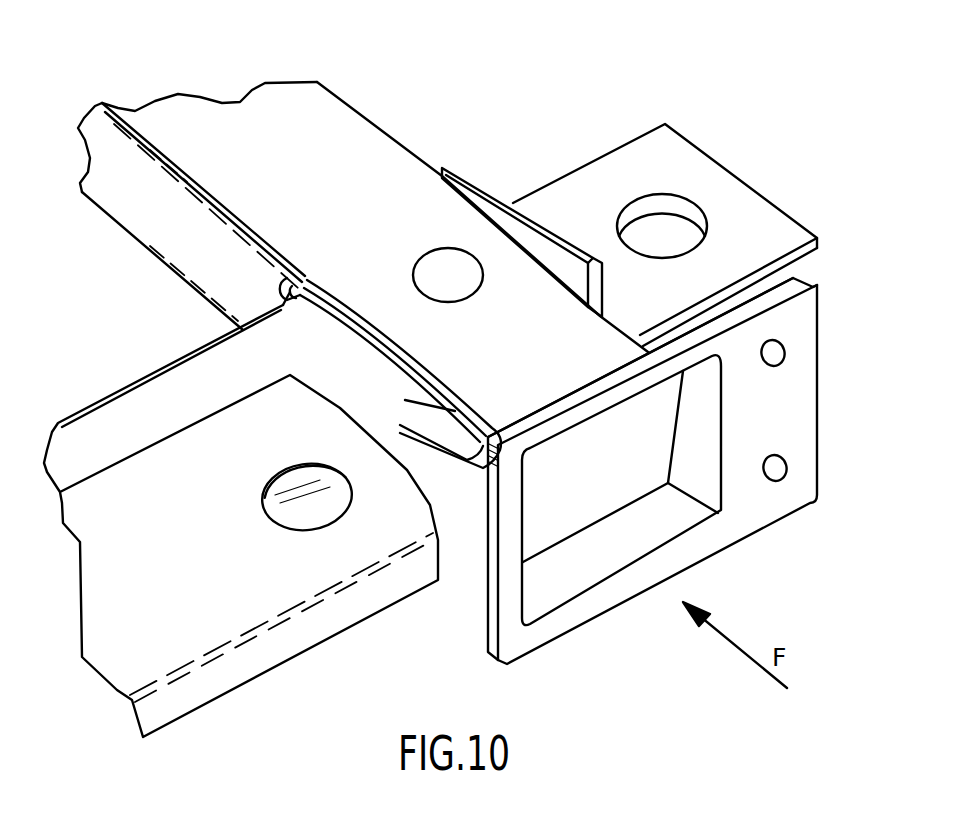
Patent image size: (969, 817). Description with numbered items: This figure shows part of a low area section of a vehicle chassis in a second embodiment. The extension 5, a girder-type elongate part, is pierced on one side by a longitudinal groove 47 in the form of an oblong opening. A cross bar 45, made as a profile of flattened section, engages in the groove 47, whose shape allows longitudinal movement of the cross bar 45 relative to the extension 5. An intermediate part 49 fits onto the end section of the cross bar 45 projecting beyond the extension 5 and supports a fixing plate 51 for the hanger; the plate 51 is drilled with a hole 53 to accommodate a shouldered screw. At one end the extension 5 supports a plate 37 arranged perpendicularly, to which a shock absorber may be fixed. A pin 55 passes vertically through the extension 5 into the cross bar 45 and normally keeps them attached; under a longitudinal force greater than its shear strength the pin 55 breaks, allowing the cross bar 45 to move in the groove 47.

The extension 5 is at (350, 155).
The plate 37 is at (555, 622).
The cross bar 45 is at (252, 652).
The longitudinal groove 47 is at (474, 425).
The intermediate part 49 is at (625, 127).
The fixing plate 51 is at (687, 163).
The hole 53 is at (695, 218).
The pin 55 is at (457, 267).